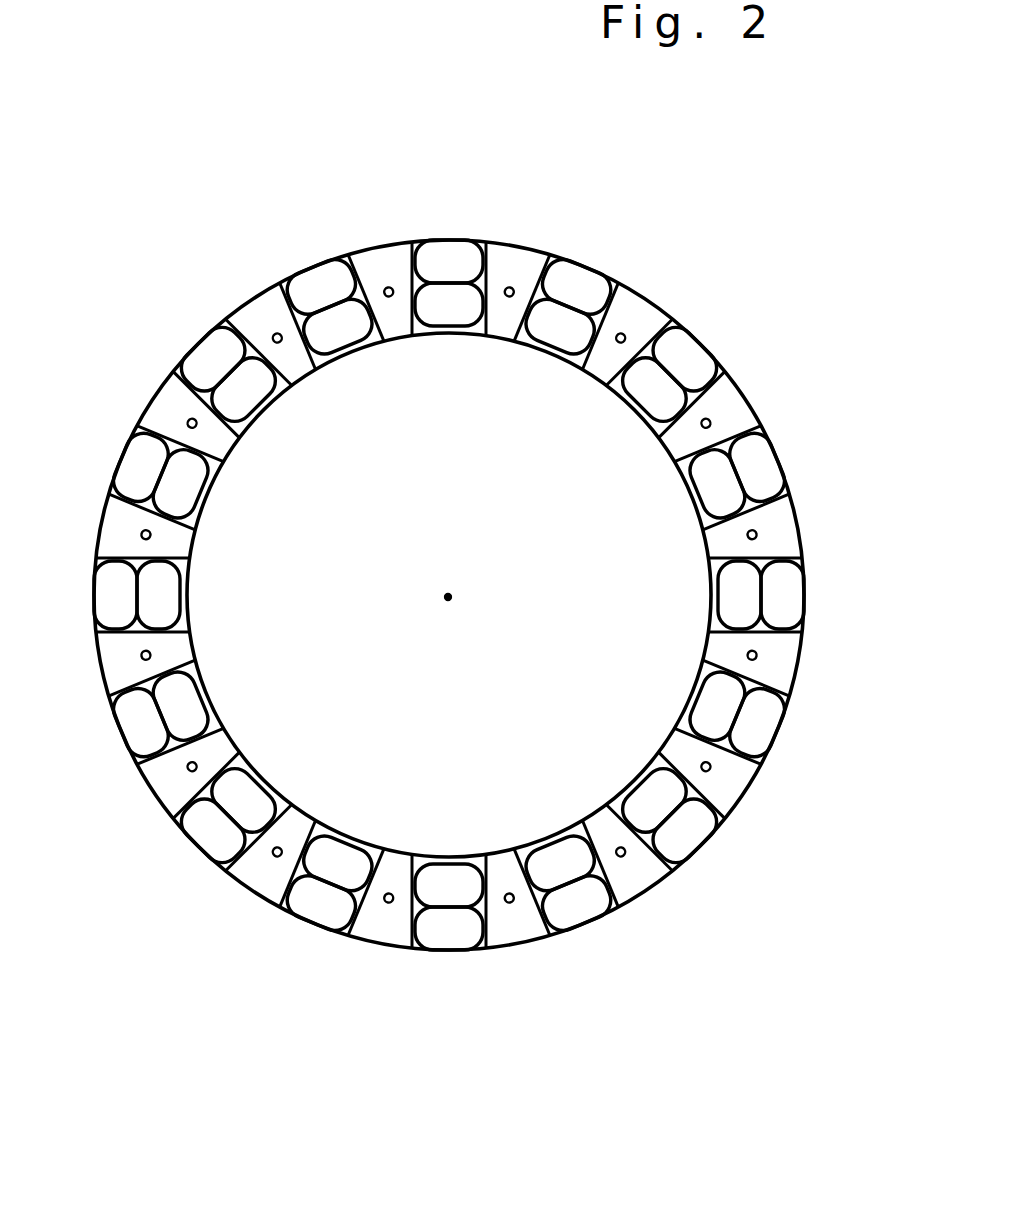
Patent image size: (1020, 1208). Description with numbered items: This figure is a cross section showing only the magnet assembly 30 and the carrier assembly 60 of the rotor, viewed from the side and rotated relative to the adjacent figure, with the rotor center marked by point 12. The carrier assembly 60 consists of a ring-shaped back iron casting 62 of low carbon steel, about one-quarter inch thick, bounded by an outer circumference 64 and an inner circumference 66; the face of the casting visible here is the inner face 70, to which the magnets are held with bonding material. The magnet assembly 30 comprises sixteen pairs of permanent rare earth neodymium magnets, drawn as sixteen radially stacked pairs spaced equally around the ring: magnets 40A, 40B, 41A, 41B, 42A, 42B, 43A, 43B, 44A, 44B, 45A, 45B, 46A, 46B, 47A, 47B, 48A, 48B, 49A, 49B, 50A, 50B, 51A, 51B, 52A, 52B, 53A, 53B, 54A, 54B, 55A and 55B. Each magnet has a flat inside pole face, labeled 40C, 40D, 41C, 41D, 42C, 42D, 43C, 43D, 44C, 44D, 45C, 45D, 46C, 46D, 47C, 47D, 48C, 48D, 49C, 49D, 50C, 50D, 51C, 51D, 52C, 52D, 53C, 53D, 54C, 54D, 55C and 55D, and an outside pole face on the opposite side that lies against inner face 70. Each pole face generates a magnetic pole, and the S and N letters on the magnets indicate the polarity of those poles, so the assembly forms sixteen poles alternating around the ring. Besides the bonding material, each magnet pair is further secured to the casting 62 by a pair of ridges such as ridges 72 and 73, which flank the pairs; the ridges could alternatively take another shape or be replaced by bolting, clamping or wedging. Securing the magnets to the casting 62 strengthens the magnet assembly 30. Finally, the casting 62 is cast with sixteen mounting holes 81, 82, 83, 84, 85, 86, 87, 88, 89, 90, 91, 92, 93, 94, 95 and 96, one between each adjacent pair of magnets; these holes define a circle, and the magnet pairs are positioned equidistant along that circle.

The rotor axis 12 is at (448, 594).
The magnet assembly 30 is at (257, 950).
The carrier assembly 60 is at (675, 290).
The back iron casting 62 is at (362, 230).
The outer circumference 64 is at (232, 312).
The inner circumference 66 is at (326, 828).
The inner face 70 is at (530, 257).
The ridge 72 is at (568, 253).
The ridge 73 is at (628, 290).
The permanent rare earth magnet 40A is at (610, 213).
The permanent rare earth magnet 40B is at (516, 369).
The inside pole face 40C is at (592, 290).
The inside pole face 40D is at (557, 345).
The permanent rare earth magnet 41A is at (727, 320).
The permanent rare earth magnet 41B is at (622, 397).
The inside pole face 41C is at (697, 362).
The inside pole face 41D is at (655, 402).
The permanent rare earth magnet 42A is at (805, 456).
The permanent rare earth magnet 42B is at (685, 483).
The inside pole face 42C is at (768, 473).
The inside pole face 42D is at (714, 492).
The permanent rare earth magnet 43A is at (828, 591).
The permanent rare earth magnet 43B is at (695, 592).
The inside pole face 43C is at (790, 598).
The inside pole face 43D is at (735, 598).
The permanent rare earth magnet 44A is at (802, 722).
The permanent rare earth magnet 44B is at (690, 694).
The inside pole face 44C is at (765, 728).
The inside pole face 44D is at (715, 700).
The permanent rare earth magnet 45A is at (724, 844).
The permanent rare earth magnet 45B is at (636, 779).
The inside pole face 45C is at (688, 845).
The inside pole face 45D is at (652, 795).
The permanent rare earth magnet 46A is at (594, 937).
The permanent rare earth magnet 46B is at (554, 817).
The inside pole face 46C is at (572, 915).
The inside pole face 46D is at (558, 858).
The permanent rare earth magnet 47A is at (453, 980).
The permanent rare earth magnet 47B is at (450, 822).
The inside pole face 47C is at (447, 940).
The inside pole face 47D is at (450, 880).
The permanent rare earth magnet 48A is at (321, 942).
The permanent rare earth magnet 48B is at (354, 814).
The inside pole face 48C is at (318, 915).
The inside pole face 48D is at (342, 858).
The permanent rare earth magnet 49A is at (180, 860).
The permanent rare earth magnet 49B is at (272, 772).
The inside pole face 49C is at (208, 840).
The inside pole face 49D is at (250, 790).
The permanent rare earth magnet 50A is at (98, 727).
The permanent rare earth magnet 50B is at (257, 693).
The inside pole face 50C is at (130, 723).
The inside pole face 50D is at (195, 707).
The permanent rare earth magnet 51A is at (72, 590).
The permanent rare earth magnet 51B is at (225, 595).
The inside pole face 51C is at (108, 590).
The inside pole face 51D is at (168, 600).
The permanent rare earth magnet 52A is at (97, 461).
The permanent rare earth magnet 52B is at (231, 490).
The inside pole face 52C is at (135, 462).
The inside pole face 52D is at (188, 490).
The permanent rare earth magnet 53A is at (166, 336).
The permanent rare earth magnet 53B is at (280, 407).
The inside pole face 53C is at (205, 355).
The inside pole face 53D is at (250, 397).
The permanent rare earth magnet 54A is at (293, 249).
The permanent rare earth magnet 54B is at (351, 359).
The inside pole face 54C is at (316, 278).
The inside pole face 54D is at (340, 340).
The permanent rare earth magnet 55A is at (449, 215).
The permanent rare earth magnet 55B is at (449, 340).
The inside pole face 55C is at (450, 262).
The inside pole face 55D is at (449, 320).
The mounting hole 81 is at (509, 287).
The mounting hole 82 is at (620, 344).
The mounting hole 83 is at (708, 420).
The mounting hole 84 is at (757, 535).
The mounting hole 85 is at (757, 656).
The mounting hole 86 is at (710, 769).
The mounting hole 87 is at (622, 857).
The mounting hole 88 is at (509, 903).
The mounting hole 89 is at (389, 903).
The mounting hole 90 is at (276, 857).
The mounting hole 91 is at (189, 770).
The mounting hole 92 is at (141, 656).
The mounting hole 93 is at (141, 535).
The mounting hole 94 is at (188, 420).
The mounting hole 95 is at (276, 333).
The mounting hole 96 is at (389, 287).